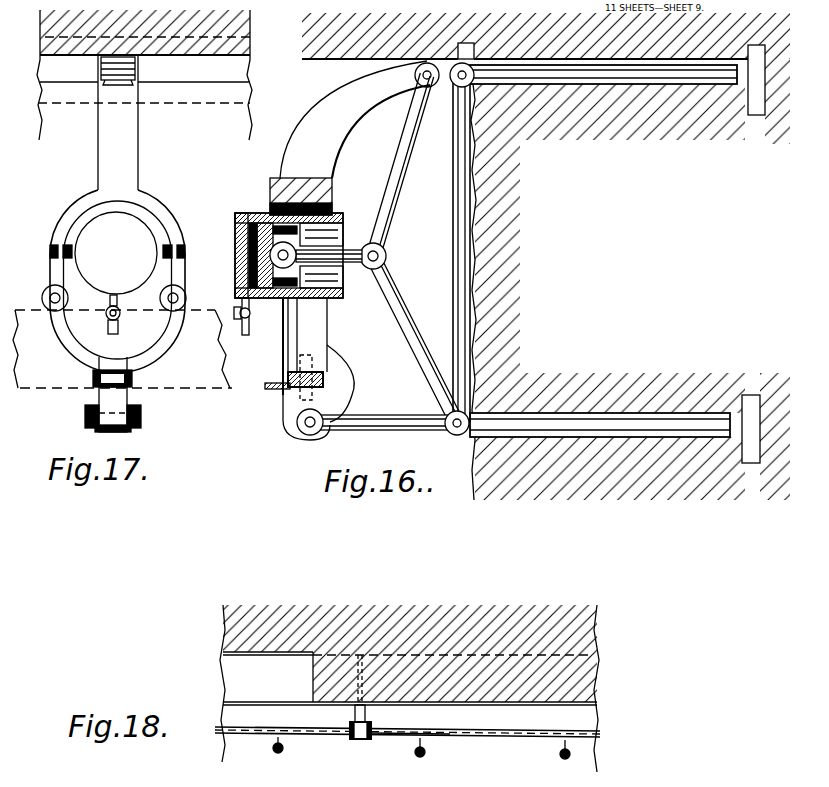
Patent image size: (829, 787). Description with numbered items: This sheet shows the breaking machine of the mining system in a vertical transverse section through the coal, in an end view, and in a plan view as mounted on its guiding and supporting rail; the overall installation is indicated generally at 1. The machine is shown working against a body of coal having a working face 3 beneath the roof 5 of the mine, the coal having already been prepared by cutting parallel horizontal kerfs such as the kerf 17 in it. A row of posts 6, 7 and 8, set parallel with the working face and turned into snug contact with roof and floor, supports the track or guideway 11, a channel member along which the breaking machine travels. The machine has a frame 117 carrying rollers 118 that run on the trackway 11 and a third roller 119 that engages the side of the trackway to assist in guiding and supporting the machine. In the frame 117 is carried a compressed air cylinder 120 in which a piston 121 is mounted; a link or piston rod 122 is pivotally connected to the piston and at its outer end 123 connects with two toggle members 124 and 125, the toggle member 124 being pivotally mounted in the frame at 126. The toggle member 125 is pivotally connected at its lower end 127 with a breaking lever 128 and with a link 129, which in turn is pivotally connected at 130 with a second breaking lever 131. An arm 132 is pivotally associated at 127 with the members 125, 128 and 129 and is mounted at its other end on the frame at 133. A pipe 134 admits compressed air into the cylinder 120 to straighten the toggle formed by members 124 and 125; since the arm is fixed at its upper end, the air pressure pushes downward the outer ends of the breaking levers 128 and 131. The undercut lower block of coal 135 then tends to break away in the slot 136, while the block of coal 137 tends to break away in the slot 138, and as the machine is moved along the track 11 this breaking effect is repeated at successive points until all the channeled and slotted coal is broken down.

In FIG. 16, the wall 1 is at (741, 240).
In FIG. 18, the wall 1 is at (588, 627).
In FIG. 16, the working face 3 is at (470, 496).
In FIG. 18, the working face 3 is at (492, 707).
In FIG. 17, the roof 5 is at (228, 64).
In FIG. 16, the roof 5 is at (322, 58).
In FIG. 18, the post 6 is at (277, 756).
In FIG. 18, the post 7 is at (424, 757).
In FIG. 18, the post 8 is at (562, 761).
In FIG. 17, the track or guideway 11 is at (200, 389).
In FIG. 16, the track or guideway 11 is at (277, 391).
In FIG. 18, the track or guideway 11 is at (500, 730).
In FIG. 17, the kerf 17 is at (174, 77).
In FIG. 17, the frame 117 is at (98, 184).
In FIG. 16, the frame 117 is at (340, 143).
In FIG. 18, the frame 117 is at (354, 715).
In FIG. 17, the rollers 118 is at (44, 291).
In FIG. 16, the rollers 118 is at (330, 307).
In FIG. 18, the rollers 118 is at (382, 731).
In FIG. 17, the third roller 119 is at (134, 380).
In FIG. 16, the third roller 119 is at (324, 378).
In FIG. 17, the compressed air cylinder 120 is at (116, 253).
In FIG. 16, the compressed air cylinder 120 is at (332, 228).
In FIG. 18, the compressed air cylinder 120 is at (362, 740).
In FIG. 16, the piston 121 is at (265, 213).
In FIG. 16, the link or piston rod 122 is at (350, 248).
In FIG. 16, the outer end of piston rod 123 is at (387, 261).
In FIG. 16, the toggle member 124 is at (414, 190).
In FIG. 16, the toggle member 125 is at (403, 304).
In FIG. 16, the pivot 126 is at (431, 82).
In FIG. 16, the lower end pivot 127 is at (456, 436).
In FIG. 16, the breaking lever 128 is at (602, 421).
In FIG. 16, the link 129 is at (453, 318).
In FIG. 16, the pivot 130 is at (480, 86).
In FIG. 16, the breaking lever 131 is at (645, 85).
In FIG. 16, the arm 132 is at (368, 422).
In FIG. 16, the pivot 133 is at (310, 436).
In FIG. 17, the pipe 134 is at (128, 317).
In FIG. 16, the pipe 134 is at (249, 330).
In FIG. 16, the lower block of coal 135 is at (610, 470).
In FIG. 16, the slot 136 is at (735, 438).
In FIG. 16, the block of coal 137 is at (545, 292).
In FIG. 16, the slot 138 is at (738, 88).